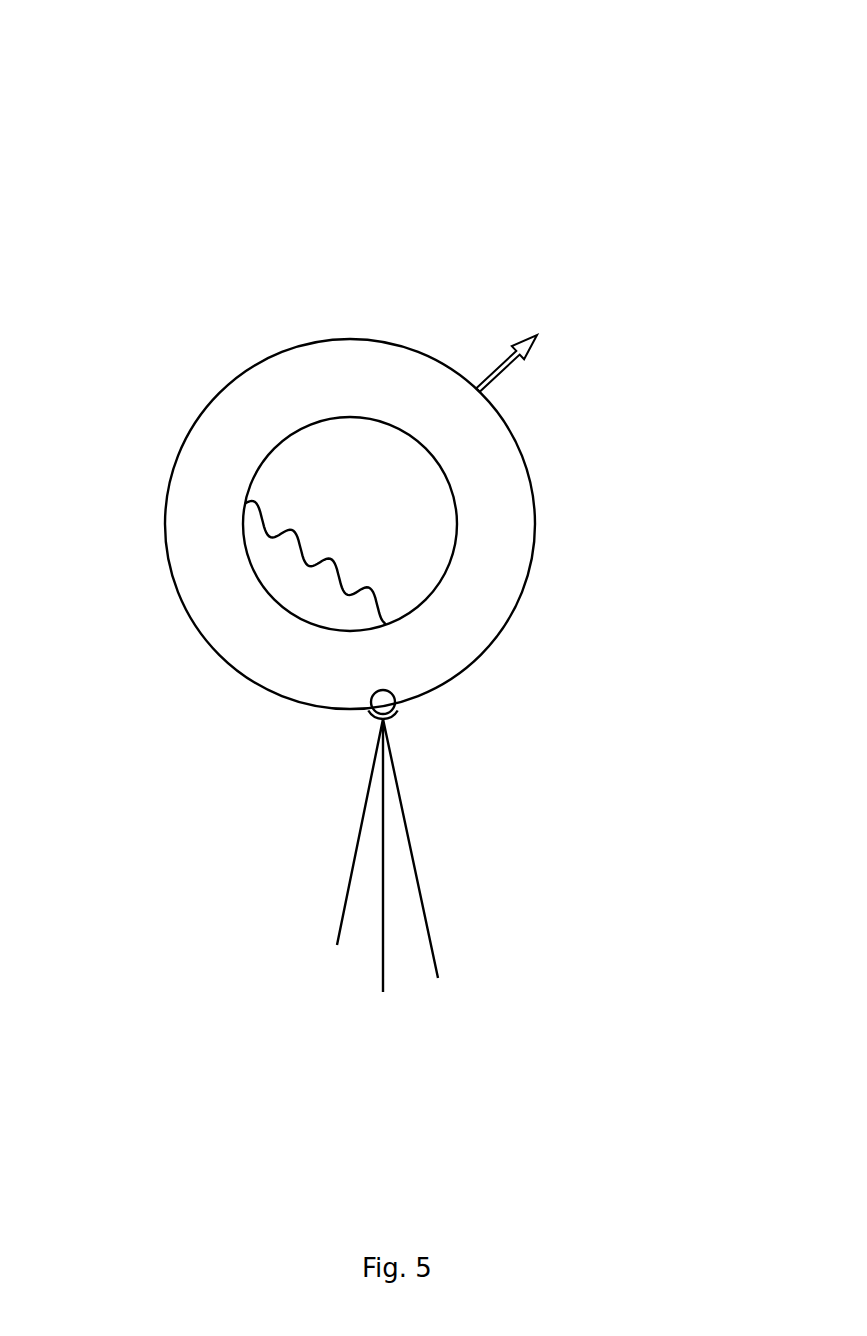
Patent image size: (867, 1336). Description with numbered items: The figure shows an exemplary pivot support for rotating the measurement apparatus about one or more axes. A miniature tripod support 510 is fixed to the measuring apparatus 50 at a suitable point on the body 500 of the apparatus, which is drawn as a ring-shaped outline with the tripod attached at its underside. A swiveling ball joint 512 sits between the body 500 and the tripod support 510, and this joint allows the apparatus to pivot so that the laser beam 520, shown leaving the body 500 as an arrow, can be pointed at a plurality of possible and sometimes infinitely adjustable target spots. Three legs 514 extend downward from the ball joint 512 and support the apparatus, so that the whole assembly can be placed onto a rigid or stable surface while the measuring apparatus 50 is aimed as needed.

The measuring apparatus 50 is at (135, 92).
The body 500 is at (277, 412).
The laser beam 520 is at (502, 348).
The miniature tripod support 510 is at (343, 763).
The swiveling ball joint 512 is at (400, 718).
The legs 514 is at (425, 927).